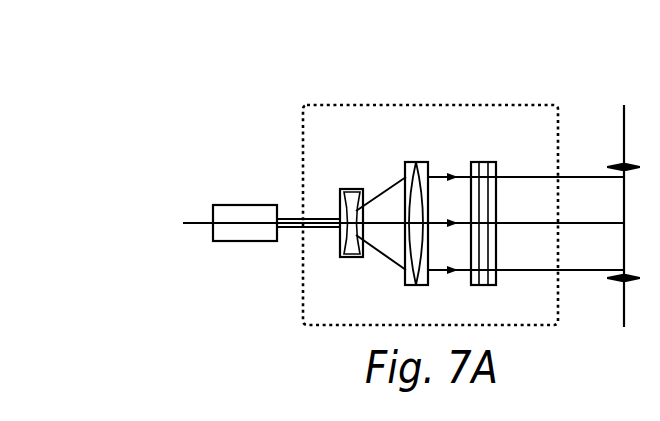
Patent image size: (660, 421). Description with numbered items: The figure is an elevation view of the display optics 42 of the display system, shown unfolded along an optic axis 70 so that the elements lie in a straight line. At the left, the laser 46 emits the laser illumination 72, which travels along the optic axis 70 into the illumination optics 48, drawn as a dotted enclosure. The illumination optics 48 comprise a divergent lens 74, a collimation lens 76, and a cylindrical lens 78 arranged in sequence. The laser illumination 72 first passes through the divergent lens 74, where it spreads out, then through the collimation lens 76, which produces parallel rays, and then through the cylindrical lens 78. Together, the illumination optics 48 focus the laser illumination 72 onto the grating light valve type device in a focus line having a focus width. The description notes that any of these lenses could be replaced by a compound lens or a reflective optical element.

The display optics 42 is at (222, 124).
The laser 46 is at (243, 205).
The illumination optics 48 is at (417, 105).
The optic axis 70 is at (193, 229).
The laser illumination 72 is at (293, 233).
The divergent lens 74 is at (350, 188).
The collimation lens 76 is at (416, 161).
The cylindrical lens 78 is at (485, 161).